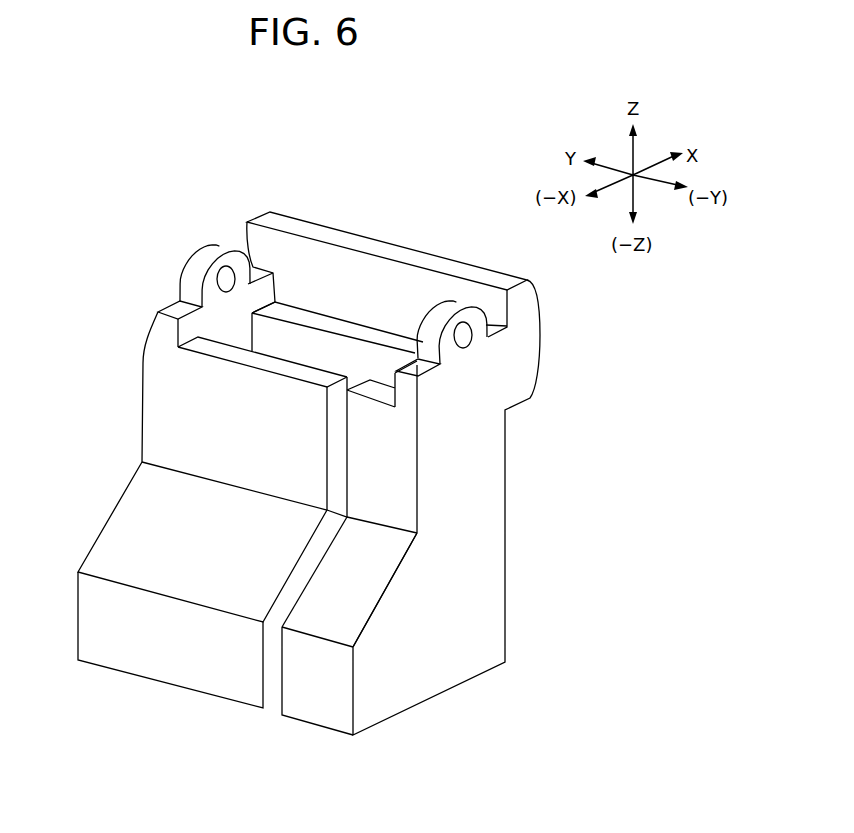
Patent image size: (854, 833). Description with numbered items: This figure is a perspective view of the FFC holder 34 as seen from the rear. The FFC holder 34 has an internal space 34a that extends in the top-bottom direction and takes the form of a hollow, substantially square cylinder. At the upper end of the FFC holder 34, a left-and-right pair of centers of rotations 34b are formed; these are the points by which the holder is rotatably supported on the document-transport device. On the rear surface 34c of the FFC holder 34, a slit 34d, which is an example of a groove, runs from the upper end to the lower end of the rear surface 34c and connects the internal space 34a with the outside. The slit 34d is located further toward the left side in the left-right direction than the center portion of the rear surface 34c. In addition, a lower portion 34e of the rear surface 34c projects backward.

The FFC holder 34 is at (490, 533).
The internal space 34a is at (318, 347).
The centers of rotations 34b is at (218, 271).
The rear surface 34c is at (163, 393).
The slit 34d is at (273, 688).
The lower portion 34e is at (137, 533).